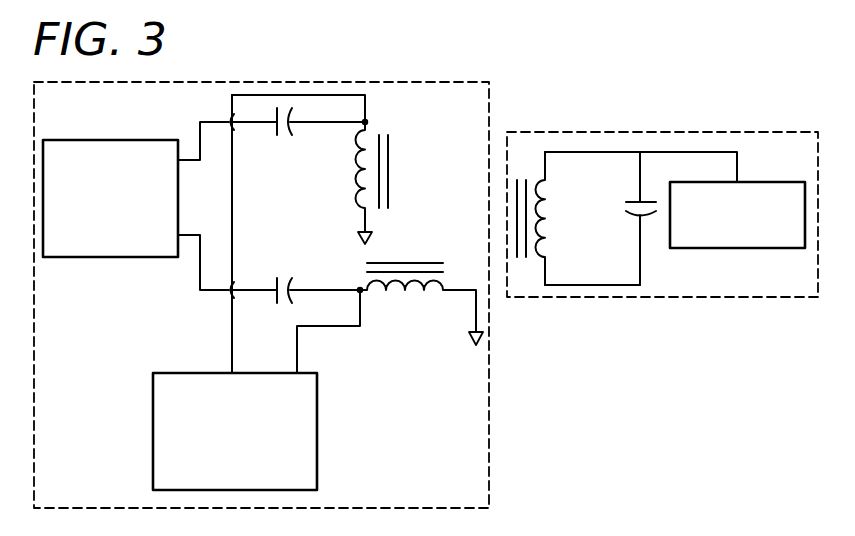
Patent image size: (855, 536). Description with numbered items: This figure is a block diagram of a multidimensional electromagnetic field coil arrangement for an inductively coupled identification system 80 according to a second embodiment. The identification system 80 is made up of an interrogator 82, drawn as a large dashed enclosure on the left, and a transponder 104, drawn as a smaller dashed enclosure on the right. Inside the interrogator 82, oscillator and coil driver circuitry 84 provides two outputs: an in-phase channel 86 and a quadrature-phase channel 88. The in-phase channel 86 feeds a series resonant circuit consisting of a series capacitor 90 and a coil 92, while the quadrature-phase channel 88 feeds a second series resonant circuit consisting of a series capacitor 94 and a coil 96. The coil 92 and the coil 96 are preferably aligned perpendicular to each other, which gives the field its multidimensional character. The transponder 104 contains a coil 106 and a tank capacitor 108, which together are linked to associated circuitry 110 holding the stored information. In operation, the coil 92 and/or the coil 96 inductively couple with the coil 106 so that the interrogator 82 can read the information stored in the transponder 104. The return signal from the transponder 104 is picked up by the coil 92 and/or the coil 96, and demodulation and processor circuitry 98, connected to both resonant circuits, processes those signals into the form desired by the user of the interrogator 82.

The inductively coupled identification system 80 is at (522, 79).
The interrogator 82 is at (489, 440).
The oscillator and coil driver circuitry 84 is at (100, 259).
The in-phase channel 86 is at (225, 121).
The quadrature-phase channel 88 is at (216, 292).
The series capacitor 90 is at (272, 140).
The coil 92 is at (356, 150).
The series capacitor 94 is at (274, 308).
The coil 96 is at (372, 285).
The demodulation and processor circuitry 98 is at (151, 432).
The transponder 104 is at (600, 130).
The coil 106 is at (536, 190).
The tank capacitor 108 is at (637, 213).
The associated circuitry 110 is at (768, 181).